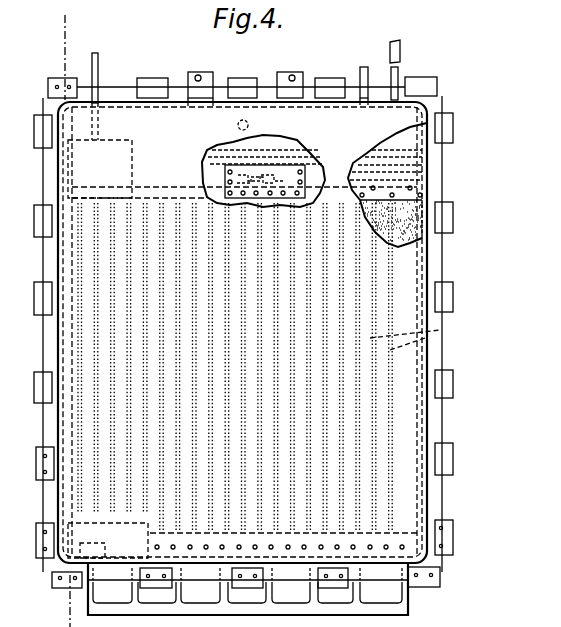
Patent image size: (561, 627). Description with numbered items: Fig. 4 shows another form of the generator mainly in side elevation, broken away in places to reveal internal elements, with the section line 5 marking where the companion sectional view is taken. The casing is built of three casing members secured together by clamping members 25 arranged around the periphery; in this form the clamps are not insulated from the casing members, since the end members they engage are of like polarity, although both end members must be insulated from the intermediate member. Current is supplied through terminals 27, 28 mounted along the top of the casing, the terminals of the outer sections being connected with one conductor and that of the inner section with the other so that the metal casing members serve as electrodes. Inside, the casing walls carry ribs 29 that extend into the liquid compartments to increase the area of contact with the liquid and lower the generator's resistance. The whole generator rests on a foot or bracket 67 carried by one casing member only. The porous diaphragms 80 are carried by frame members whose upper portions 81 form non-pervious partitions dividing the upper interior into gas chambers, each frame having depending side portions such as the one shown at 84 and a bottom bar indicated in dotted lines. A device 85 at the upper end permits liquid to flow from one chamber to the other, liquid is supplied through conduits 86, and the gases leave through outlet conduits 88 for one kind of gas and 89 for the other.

The section line 5- 5 is at (54, 608).
The clamping members 25 is at (58, 77).
The terminal 27 is at (283, 72).
The terminal 28 is at (193, 72).
The ribs 29 is at (443, 329).
The foot or bracket 67 is at (398, 606).
The porous diaphragm 80 is at (390, 220).
The upper portion of frame member 81 is at (428, 158).
The depending side portion 84 is at (421, 235).
The passage device 85 is at (287, 172).
The conduit 86 is at (96, 56).
The outlet conduit 88 is at (393, 67).
The outlet conduit 89 is at (362, 70).